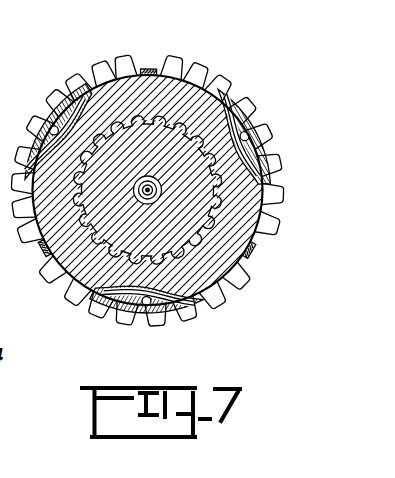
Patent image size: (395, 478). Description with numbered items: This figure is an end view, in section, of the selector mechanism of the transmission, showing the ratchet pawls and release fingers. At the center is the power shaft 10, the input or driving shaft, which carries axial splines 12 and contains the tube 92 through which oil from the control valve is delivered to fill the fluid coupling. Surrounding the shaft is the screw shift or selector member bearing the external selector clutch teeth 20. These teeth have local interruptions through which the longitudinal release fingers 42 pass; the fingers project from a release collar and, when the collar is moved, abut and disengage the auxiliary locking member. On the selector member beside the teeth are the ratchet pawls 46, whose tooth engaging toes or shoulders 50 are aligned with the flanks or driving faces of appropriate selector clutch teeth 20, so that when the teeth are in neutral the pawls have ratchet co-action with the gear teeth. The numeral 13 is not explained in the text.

The power shaft 10 is at (259, 222).
The axial splines 12 is at (243, 287).
The gear 13 is at (5, 301).
The selector clutch teeth 20 is at (254, 99).
The release fingers 42 is at (150, 68).
The ratchet pawls 46 is at (176, 325).
The tooth engaging toes 50 is at (237, 96).
The tube 92 is at (159, 199).